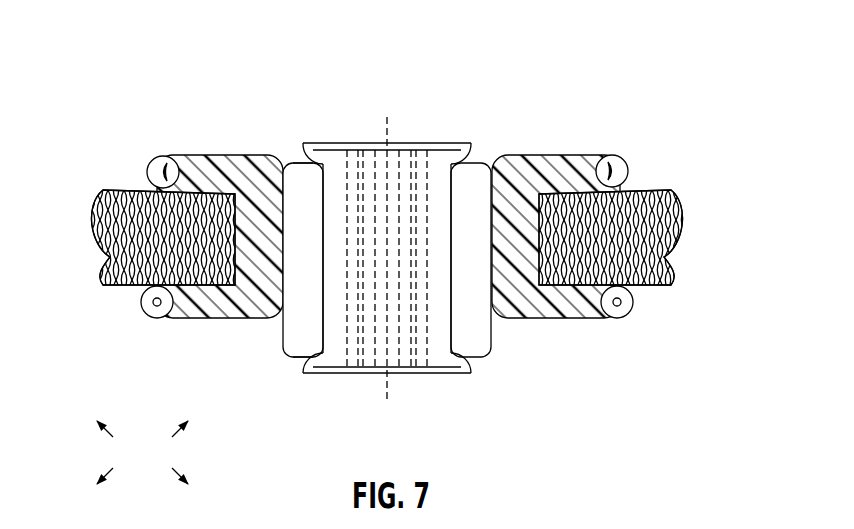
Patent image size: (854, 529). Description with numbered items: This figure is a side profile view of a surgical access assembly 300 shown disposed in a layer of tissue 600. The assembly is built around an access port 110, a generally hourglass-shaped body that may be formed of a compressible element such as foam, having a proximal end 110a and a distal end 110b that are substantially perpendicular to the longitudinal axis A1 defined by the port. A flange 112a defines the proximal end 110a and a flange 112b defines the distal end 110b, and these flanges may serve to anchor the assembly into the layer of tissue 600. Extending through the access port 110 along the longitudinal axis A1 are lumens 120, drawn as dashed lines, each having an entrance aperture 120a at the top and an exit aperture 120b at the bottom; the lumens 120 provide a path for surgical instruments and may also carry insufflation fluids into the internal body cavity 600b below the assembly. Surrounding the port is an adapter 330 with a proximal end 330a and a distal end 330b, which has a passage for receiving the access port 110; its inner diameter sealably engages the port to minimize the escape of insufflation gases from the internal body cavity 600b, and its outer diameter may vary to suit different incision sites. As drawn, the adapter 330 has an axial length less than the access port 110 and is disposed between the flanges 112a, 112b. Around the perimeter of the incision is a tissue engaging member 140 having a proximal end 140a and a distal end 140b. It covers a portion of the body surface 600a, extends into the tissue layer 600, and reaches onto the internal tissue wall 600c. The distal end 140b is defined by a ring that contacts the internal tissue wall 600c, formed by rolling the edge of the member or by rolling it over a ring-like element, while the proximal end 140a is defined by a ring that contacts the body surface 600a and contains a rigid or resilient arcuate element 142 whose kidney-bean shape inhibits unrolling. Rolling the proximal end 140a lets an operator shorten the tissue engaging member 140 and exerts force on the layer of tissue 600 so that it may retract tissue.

The surgical access assembly 300 is at (216, 54).
The access port 110 is at (460, 210).
The proximal end 110a is at (440, 143).
The distal end 110b is at (435, 374).
The flange 112a is at (470, 146).
The flange 112b is at (467, 374).
The lumen 120 is at (428, 310).
The entrance aperture 120a is at (347, 143).
The exit aperture 120b is at (347, 373).
The longitudinal axis A1 is at (390, 258).
The adapter 330 is at (280, 271).
The proximal end 330a is at (299, 162).
The distal end 330b is at (299, 358).
The tissue engaging member 140 is at (225, 236).
The proximal end 140a is at (147, 172).
The distal end 140b is at (147, 318).
The arcuate element 142 is at (158, 158).
The layer of tissue 600 is at (683, 227).
The body surface 600a is at (662, 188).
The internal body cavity 600b is at (142, 452).
The internal tissue wall 600c is at (653, 288).